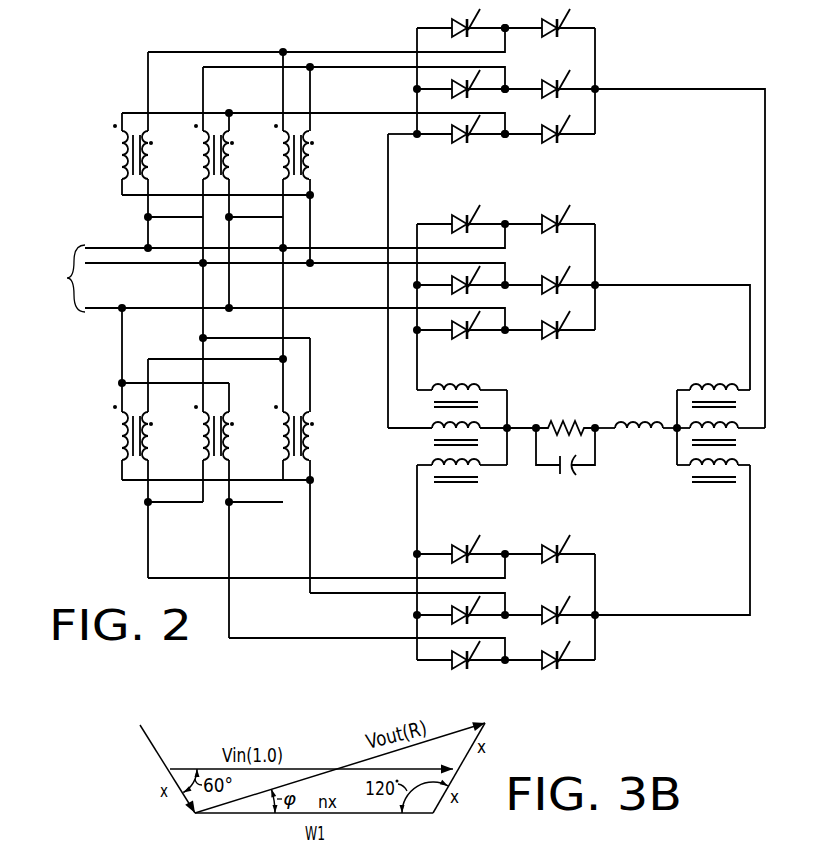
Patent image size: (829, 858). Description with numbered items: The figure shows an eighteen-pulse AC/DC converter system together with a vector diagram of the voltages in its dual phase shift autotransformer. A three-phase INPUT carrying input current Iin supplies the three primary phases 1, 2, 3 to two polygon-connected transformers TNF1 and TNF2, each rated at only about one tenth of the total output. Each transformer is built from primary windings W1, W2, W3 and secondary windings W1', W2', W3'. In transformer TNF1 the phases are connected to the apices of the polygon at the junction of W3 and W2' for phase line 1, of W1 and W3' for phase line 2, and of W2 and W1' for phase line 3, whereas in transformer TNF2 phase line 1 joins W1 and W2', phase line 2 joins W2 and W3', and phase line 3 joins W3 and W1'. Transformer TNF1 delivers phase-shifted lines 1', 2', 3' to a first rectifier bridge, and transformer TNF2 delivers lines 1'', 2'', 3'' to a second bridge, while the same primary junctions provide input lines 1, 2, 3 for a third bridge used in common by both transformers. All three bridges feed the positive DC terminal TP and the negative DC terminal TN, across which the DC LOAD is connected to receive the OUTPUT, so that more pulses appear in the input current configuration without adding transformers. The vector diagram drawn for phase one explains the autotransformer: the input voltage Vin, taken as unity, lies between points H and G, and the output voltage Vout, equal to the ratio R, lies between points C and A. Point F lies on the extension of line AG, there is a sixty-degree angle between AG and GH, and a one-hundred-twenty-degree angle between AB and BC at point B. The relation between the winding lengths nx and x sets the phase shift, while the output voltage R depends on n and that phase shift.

In FIG. 2, the primary phase line 1 is at (295, 318).
In FIG. 2, the primary phase line 2 is at (295, 274).
In FIG. 2, the primary phase line 3 is at (295, 235).
In FIG. 2, the phase line of transformer TNF1 1' is at (315, 112).
In FIG. 2, the phase line of transformer TNF1 2' is at (356, 78).
In FIG. 2, the phase line of transformer TNF1 3' is at (328, 40).
In FIG. 2, the phase line of transformer TNF2 1'' is at (367, 635).
In FIG. 2, the phase line of transformer TNF2 2'' is at (407, 605).
In FIG. 2, the phase line of transformer TNF2 3'' is at (326, 565).
In FIG. 2, the first transformer TNF1 is at (367, 205).
In FIG. 2, the second transformer TNF2 is at (373, 517).
In FIG. 2, the negative DC terminal TN is at (509, 426).
In FIG. 2, the positive DC terminal TP is at (676, 426).
In FIG. 2, the winding W1 is at (104, 289).
In FIG. 2, the winding W2 is at (184, 289).
In FIG. 2, the winding W3 is at (269, 289).
In FIG. 2, the winding W1' is at (164, 310).
In FIG. 2, the winding W2' is at (245, 310).
In FIG. 2, the winding W3' is at (330, 310).
In FIG. 2, the input INPUT is at (53, 278).
In FIG. 2, the input current Iin is at (199, 246).
In FIG. 2, the DC load DC LOAD is at (611, 418).
In FIG. 2, the output OUTPUT is at (565, 500).
In FIG. 3B, the vector point A is at (195, 814).
In FIG. 3B, the vector point B is at (433, 814).
In FIG. 3B, the vector point C is at (486, 723).
In FIG. 3B, the vector point F is at (140, 725).
In FIG. 3B, the vector point G is at (171, 768).
In FIG. 3B, the vector point H is at (456, 770).